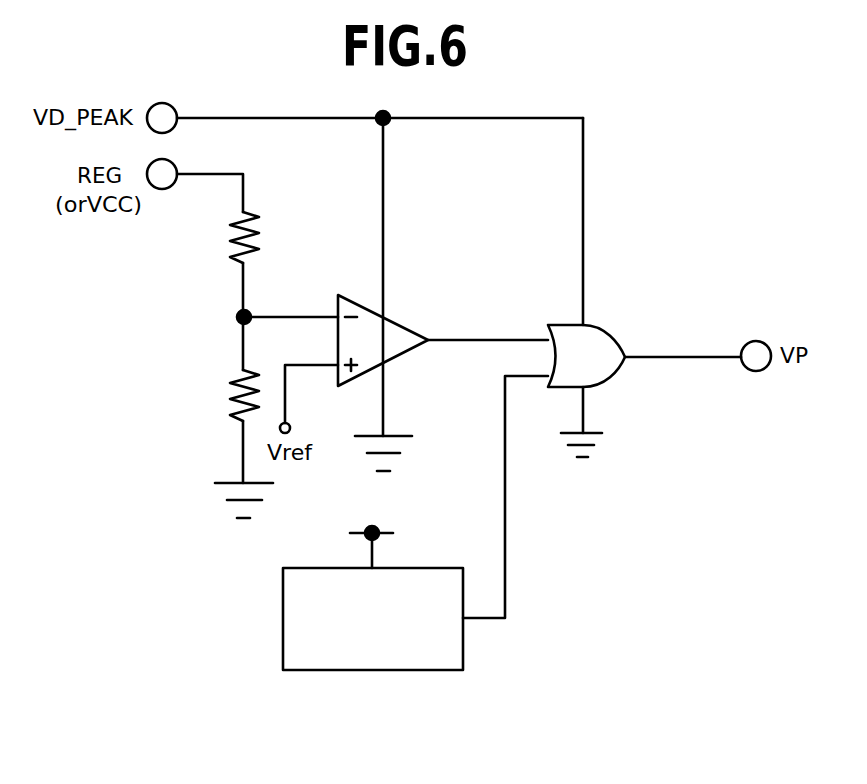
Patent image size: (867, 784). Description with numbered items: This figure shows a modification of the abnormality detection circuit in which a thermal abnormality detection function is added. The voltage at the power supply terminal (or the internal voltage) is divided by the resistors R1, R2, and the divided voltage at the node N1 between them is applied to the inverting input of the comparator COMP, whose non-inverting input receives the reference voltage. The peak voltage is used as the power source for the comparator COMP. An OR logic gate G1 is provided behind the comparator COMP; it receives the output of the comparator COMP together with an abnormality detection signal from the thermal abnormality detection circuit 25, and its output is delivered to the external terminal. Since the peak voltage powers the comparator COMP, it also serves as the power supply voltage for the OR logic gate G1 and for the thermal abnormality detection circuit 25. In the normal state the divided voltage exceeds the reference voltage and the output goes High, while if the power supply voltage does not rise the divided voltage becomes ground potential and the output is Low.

The thermal abnormality detection circuit 25 is at (283, 592).
The resistor R1 is at (226, 237).
The resistor R2 is at (226, 395).
The node N1 is at (226, 317).
The comparator COMP is at (403, 324).
The OR logic gate G1 is at (610, 335).